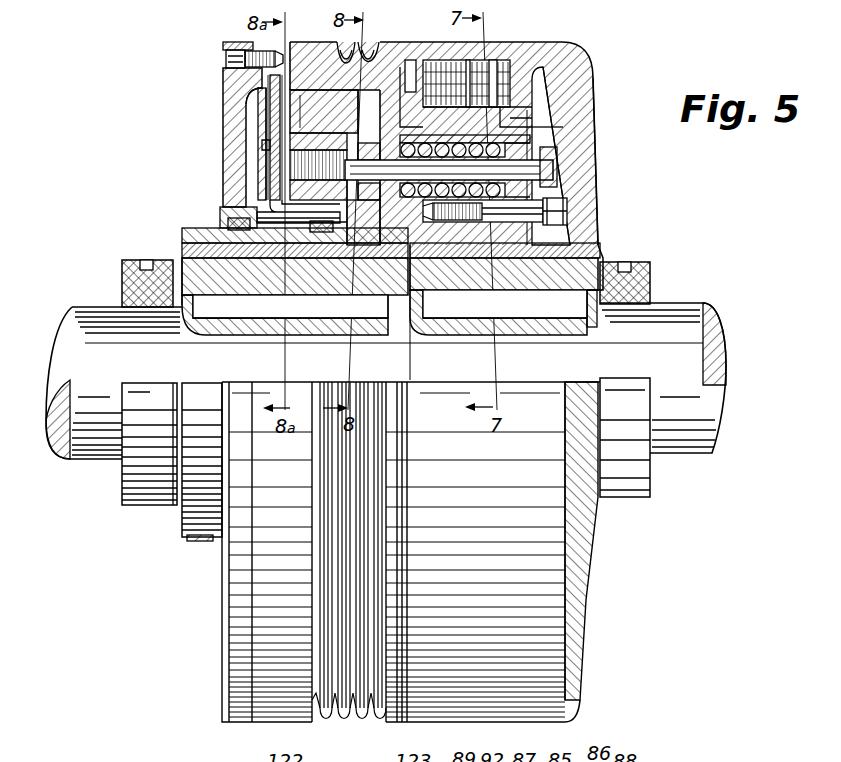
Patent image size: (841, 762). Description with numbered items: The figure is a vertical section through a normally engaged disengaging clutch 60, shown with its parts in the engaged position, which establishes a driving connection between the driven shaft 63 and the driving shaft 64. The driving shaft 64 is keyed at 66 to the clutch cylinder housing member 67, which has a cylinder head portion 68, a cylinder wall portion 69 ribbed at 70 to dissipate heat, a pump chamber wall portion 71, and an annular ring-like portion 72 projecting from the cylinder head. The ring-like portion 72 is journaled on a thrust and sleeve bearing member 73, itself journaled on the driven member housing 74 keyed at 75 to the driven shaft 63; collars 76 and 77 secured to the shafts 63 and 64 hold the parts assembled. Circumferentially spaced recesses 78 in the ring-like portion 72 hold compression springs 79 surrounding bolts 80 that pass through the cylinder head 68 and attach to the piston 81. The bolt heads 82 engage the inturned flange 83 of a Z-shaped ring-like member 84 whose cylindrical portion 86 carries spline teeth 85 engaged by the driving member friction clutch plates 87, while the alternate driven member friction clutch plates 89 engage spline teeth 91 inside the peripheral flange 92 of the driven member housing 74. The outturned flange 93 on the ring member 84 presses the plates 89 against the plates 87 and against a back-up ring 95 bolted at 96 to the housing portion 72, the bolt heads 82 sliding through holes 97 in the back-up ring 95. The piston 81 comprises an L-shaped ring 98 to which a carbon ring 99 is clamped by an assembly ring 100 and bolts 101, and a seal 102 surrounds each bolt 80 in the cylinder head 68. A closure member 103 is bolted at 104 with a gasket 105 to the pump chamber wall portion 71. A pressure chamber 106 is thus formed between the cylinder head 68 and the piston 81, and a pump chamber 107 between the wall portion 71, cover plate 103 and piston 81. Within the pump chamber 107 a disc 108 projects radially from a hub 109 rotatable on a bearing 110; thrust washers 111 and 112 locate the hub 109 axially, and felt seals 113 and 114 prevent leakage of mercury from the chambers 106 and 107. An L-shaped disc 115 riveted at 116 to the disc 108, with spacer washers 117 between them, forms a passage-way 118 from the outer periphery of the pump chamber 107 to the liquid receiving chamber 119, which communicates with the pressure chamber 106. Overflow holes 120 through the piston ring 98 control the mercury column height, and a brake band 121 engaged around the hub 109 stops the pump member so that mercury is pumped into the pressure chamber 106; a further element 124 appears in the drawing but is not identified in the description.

The normally engaged clutch 60 is at (595, 80).
The driven shaft 63 is at (697, 448).
The driving shaft 64 is at (78, 448).
The key 66 is at (258, 305).
The clutch cylinder housing member 67 is at (328, 290).
The cylinder head portion 68 is at (367, 50).
The cylinder wall portion 69 is at (348, 50).
The ribs 70 is at (324, 48).
The pump chamber wall portion 71 is at (253, 38).
The annular ring-like portion 72 is at (447, 235).
The thrust and sleeve bearing member 73 is at (553, 249).
The driven member housing 74 is at (508, 280).
The key 75 is at (540, 305).
The collar 76 is at (626, 487).
The collar 77 is at (145, 497).
The recesses 78 is at (548, 135).
The compression springs 79 is at (550, 150).
The bolts 80 is at (553, 170).
The piston 81 is at (298, 189).
The bolt heads 82 is at (497, 148).
The inturned flange 83 is at (510, 188).
The ring-like member 84 is at (545, 118).
The spline teeth 85 is at (535, 110).
The cylindrical portion 86 is at (558, 40).
The driving member friction clutch plates 87 is at (517, 115).
The driven member friction clutch plates 89 is at (451, 62).
The spline teeth 91 is at (418, 62).
The peripheral flange 92 is at (495, 68).
The outturned flange 93 is at (410, 60).
The back-up ring 95 is at (593, 78).
The bolts 96 is at (560, 212).
The holes 97 is at (575, 152).
The ring 98 is at (266, 165).
The carbon ring 99 is at (324, 111).
The assembly ring 100 is at (350, 200).
The bolts 101 is at (285, 210).
The seal 102 is at (355, 185).
The closure member 103 is at (262, 124).
The bolts 104 is at (226, 57).
The gasket 105 is at (228, 78).
The pressure chamber 106 is at (357, 142).
The pump chamber 107 is at (245, 96).
The disc 108 is at (267, 133).
The hub 109 is at (190, 240).
The bearing 110 is at (180, 248).
The thrust washer 111 is at (343, 258).
The thrust washer 112 is at (240, 208).
The felt seal 113 is at (242, 222).
The felt seal 114 is at (316, 190).
The L-shaped disc 115 is at (270, 117).
The rivets 116 is at (262, 145).
The spacer washers 117 is at (270, 157).
The passage-way 118 is at (240, 228).
The liquid receiving chamber 119 is at (350, 210).
The overflow holes 120 is at (303, 134).
The brake band 121 is at (193, 540).
The drum 124 is at (411, 572).